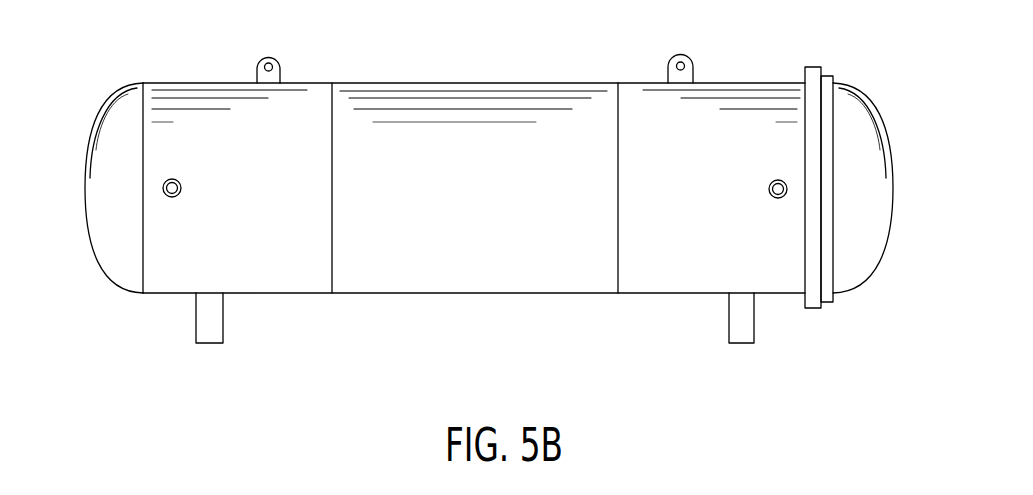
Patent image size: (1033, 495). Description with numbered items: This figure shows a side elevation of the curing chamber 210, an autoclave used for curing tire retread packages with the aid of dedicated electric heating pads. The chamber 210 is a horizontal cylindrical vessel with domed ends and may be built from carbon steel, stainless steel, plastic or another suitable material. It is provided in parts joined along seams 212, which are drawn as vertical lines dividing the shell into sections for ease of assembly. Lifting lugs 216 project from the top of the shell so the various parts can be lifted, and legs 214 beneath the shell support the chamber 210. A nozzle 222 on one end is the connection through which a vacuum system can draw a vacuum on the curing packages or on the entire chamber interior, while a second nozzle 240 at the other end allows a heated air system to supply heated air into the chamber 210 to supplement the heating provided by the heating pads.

The curing chamber 210 is at (463, 104).
The seams 212 is at (332, 300).
The legs 214 is at (757, 316).
The lifting lugs 216 is at (257, 62).
The nozzle 222 is at (162, 190).
The nozzle 240 is at (787, 188).